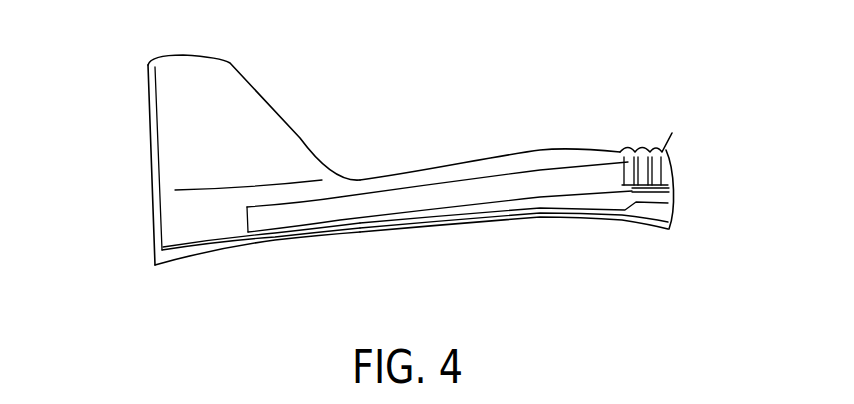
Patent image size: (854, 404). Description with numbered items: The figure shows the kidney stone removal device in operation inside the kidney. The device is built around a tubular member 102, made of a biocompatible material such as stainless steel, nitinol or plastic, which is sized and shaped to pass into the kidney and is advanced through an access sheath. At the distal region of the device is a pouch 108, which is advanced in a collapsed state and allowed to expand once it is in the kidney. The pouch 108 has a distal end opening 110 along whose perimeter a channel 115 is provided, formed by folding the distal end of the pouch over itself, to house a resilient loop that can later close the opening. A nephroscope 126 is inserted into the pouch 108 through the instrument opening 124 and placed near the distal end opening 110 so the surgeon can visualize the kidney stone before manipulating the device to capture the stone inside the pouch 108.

The tubular member 102 is at (618, 222).
The pouch 108 is at (189, 112).
The distal end opening 110 is at (152, 203).
The channel 115 is at (155, 243).
The instrument opening 124 is at (318, 172).
The nephroscope 126 is at (435, 200).